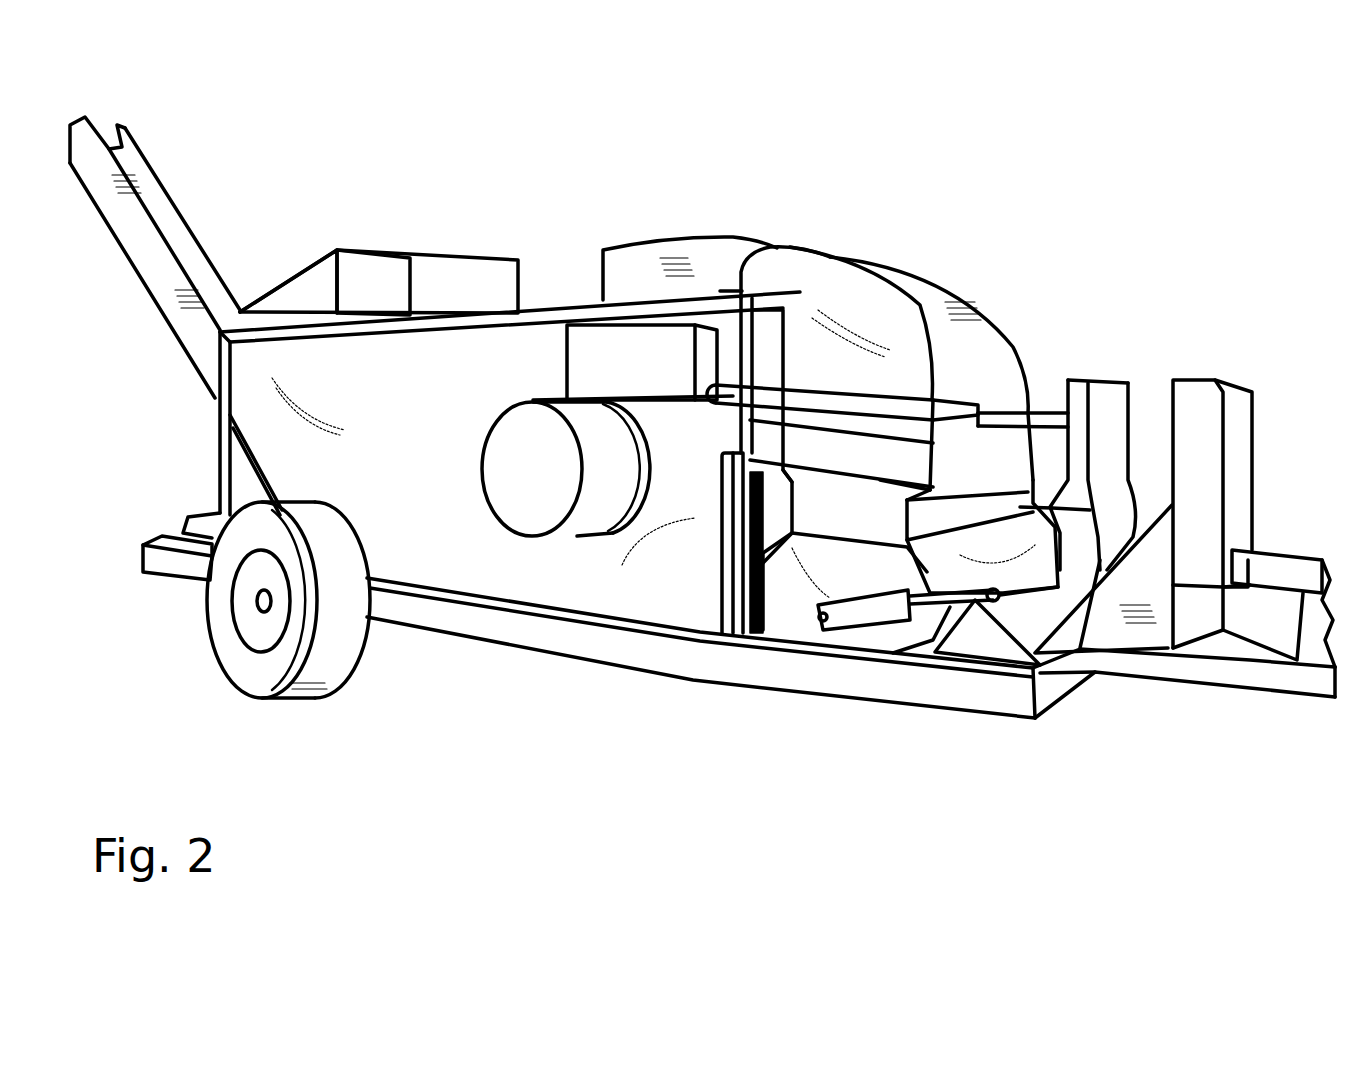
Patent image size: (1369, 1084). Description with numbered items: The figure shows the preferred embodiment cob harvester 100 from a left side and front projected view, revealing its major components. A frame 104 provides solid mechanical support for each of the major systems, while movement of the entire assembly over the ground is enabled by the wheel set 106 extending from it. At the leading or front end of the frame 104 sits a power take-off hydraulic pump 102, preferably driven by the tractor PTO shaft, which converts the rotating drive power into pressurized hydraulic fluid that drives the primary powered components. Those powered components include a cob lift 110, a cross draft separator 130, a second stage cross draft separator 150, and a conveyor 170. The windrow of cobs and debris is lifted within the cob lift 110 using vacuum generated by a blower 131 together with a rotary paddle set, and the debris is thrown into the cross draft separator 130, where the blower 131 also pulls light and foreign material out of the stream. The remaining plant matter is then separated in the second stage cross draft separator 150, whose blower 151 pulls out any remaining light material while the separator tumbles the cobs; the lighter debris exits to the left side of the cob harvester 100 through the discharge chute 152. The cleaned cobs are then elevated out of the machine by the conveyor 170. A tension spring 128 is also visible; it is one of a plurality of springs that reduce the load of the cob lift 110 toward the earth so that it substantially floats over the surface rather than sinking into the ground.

The cob harvester 100 is at (650, 793).
The power take-off hydraulic pump 102 is at (1213, 372).
The frame 104 is at (933, 717).
The wheel set 106 is at (258, 703).
The cob lift 110 is at (936, 260).
The tension spring 128 is at (772, 612).
The cross draft separator 130 is at (743, 220).
The blower 131 is at (708, 247).
The second stage cross draft separator 150 is at (390, 244).
The blower 151 is at (433, 270).
The discharge chute 152 is at (310, 278).
The conveyor 170 is at (174, 170).